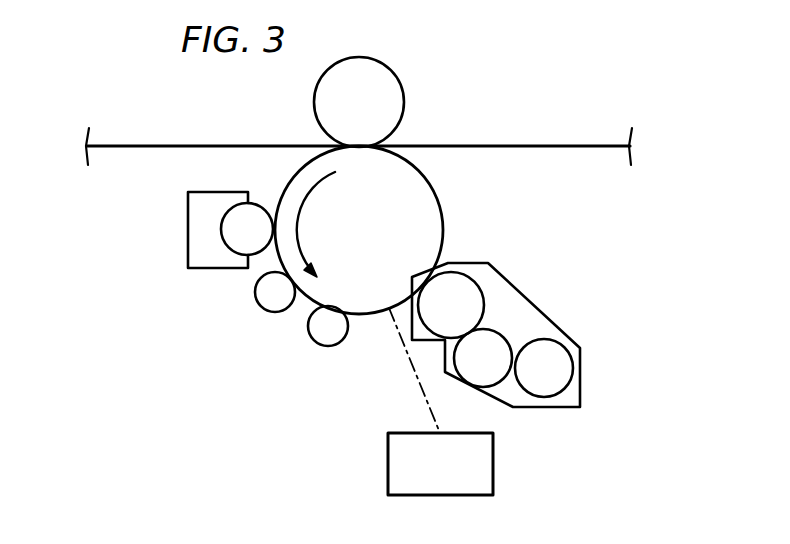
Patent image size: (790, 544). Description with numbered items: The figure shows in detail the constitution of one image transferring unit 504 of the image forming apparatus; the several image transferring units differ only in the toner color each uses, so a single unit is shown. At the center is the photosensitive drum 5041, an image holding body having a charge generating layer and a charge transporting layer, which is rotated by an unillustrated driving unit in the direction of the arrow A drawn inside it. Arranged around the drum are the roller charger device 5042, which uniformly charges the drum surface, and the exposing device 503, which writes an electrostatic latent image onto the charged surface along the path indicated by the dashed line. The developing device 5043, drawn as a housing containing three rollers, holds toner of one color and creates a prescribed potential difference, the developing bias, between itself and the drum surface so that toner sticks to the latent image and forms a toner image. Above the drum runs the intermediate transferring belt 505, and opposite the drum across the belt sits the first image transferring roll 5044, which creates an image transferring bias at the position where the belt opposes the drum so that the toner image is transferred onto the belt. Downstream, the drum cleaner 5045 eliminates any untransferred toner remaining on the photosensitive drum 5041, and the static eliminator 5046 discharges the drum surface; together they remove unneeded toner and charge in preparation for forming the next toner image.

The exposing device 503 is at (491, 456).
The image transferring unit 504 is at (238, 409).
The intermediate transferring belt 505 is at (531, 145).
The photosensitive drum 5041 is at (437, 196).
The roller charger device 5042 is at (327, 346).
The developing device 5043 is at (542, 322).
The first image transferring roll 5044 is at (396, 88).
The drum cleaner 5045 is at (188, 243).
The static eliminator 5046 is at (265, 300).